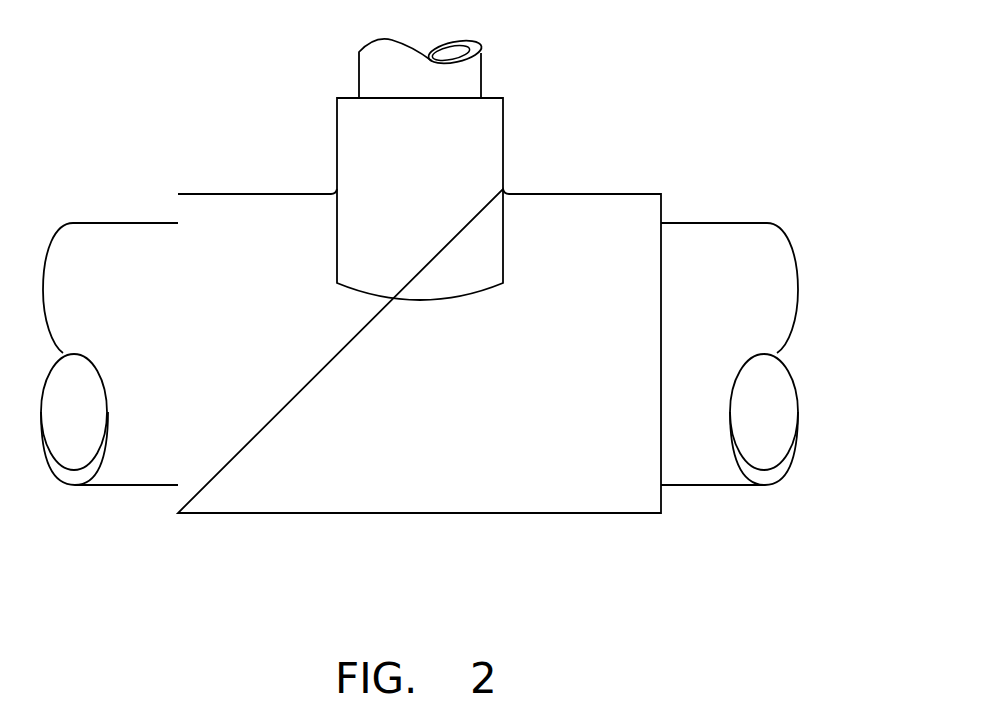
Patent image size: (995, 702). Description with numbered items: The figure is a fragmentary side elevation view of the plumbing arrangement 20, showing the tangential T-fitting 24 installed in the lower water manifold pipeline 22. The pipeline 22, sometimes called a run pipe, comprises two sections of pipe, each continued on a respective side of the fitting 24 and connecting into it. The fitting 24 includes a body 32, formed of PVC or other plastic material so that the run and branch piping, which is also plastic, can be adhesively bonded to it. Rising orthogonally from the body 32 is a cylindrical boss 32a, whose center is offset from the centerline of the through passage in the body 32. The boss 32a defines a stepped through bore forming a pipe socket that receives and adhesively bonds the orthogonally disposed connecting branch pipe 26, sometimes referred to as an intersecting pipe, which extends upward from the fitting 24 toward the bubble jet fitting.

The plumbing arrangement 20 is at (537, 163).
The lower water manifold pipeline 22 is at (122, 478).
The tangential T-fitting 24 is at (223, 495).
The connecting branch pipe 26 is at (472, 80).
The body 32 is at (560, 487).
The cylindrical boss 32a is at (483, 222).